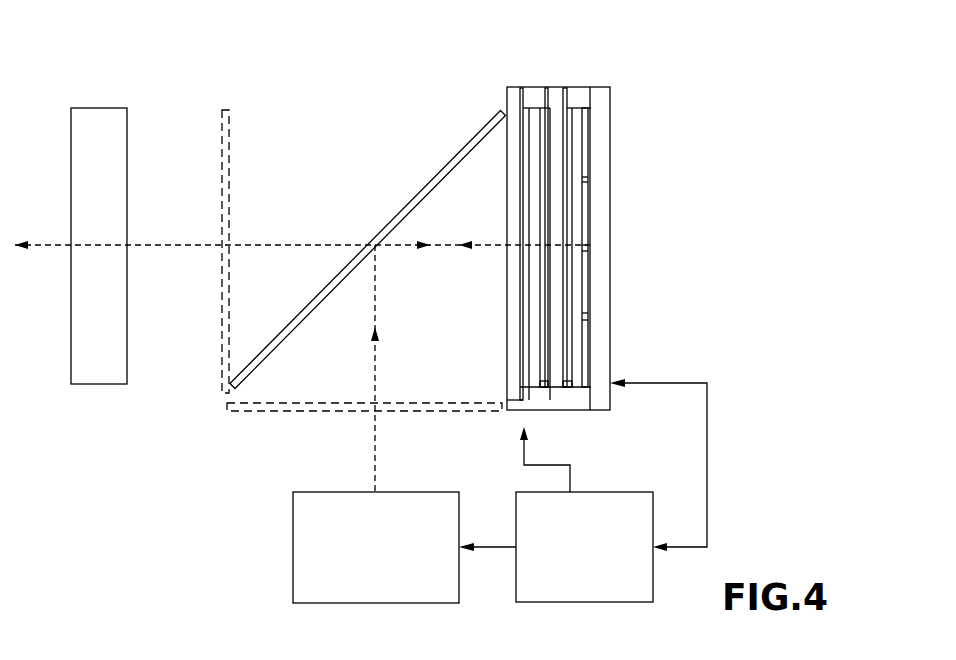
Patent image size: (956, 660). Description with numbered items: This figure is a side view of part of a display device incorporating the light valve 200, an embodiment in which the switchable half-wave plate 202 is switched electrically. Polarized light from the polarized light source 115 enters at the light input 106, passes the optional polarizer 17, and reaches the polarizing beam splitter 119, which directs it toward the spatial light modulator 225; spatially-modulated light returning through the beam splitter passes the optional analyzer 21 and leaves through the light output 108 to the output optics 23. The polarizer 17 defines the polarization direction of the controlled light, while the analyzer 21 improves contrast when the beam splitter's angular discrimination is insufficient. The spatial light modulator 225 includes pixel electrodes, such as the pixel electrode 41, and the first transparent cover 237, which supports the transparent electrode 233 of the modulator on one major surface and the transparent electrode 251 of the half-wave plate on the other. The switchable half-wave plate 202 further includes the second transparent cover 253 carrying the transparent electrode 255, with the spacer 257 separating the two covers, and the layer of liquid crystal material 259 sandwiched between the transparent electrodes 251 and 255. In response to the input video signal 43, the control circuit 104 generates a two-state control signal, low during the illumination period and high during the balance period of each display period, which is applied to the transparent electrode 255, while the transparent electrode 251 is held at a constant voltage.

The output optics 23 is at (73, 357).
The analyzer 21 is at (227, 160).
The light output 108 is at (215, 216).
The polarizing beam splitter 119 is at (447, 165).
The polarizer 17 is at (270, 412).
The light input 106 is at (367, 423).
The switchable half-wave plate 202 is at (502, 234).
The light valve 200 is at (432, 331).
The polarized light source 115 is at (293, 545).
The control circuit 104 is at (543, 602).
The input video signal 43 is at (630, 378).
The spatial light modulator 225 is at (615, 136).
The transparent electrode 233 is at (566, 113).
The pixel electrode 41 is at (585, 200).
The layer of liquid crystal material 259 is at (535, 125).
The transparent electrode 255 is at (527, 113).
The transparent electrode 251 is at (545, 118).
The second transparent cover 253 is at (508, 404).
The spacer 257 is at (535, 398).
The first transparent cover 237 is at (555, 400).